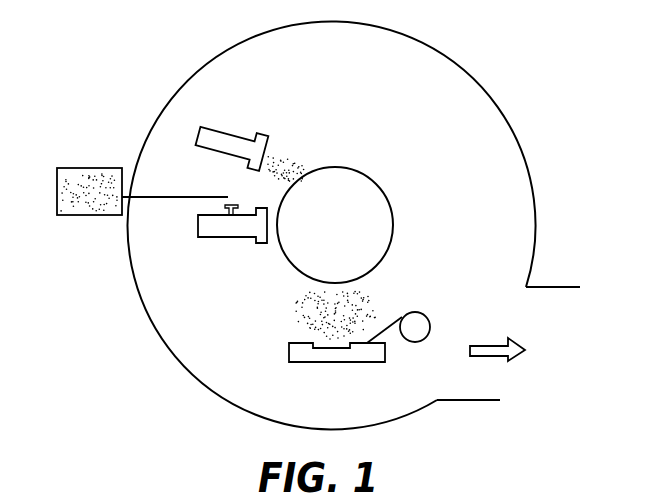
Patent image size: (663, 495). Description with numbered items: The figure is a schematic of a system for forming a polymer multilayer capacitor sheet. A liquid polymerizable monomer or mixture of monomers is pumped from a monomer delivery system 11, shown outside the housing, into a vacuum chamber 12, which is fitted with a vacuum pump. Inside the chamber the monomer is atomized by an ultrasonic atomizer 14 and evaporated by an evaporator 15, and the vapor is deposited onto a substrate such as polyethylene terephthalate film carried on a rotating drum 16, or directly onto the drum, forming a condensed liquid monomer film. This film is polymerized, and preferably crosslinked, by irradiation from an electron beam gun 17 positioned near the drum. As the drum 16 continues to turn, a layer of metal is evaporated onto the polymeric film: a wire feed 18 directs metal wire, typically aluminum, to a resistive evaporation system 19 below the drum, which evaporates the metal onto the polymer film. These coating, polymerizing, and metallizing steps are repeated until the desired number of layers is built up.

The monomer delivery system 11 is at (88, 168).
The vacuum chamber 12 is at (452, 61).
The ultrasonic atomizer 14 is at (225, 195).
The evaporator 15 is at (230, 237).
The rotating drum 16 is at (328, 168).
The electron beam gun 17 is at (247, 140).
The wire feed 18 is at (432, 316).
The resistive evaporation system 19 is at (348, 363).